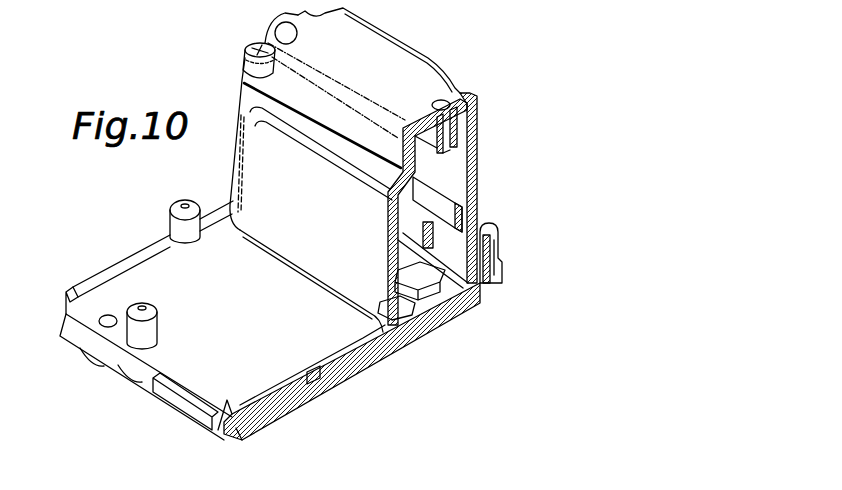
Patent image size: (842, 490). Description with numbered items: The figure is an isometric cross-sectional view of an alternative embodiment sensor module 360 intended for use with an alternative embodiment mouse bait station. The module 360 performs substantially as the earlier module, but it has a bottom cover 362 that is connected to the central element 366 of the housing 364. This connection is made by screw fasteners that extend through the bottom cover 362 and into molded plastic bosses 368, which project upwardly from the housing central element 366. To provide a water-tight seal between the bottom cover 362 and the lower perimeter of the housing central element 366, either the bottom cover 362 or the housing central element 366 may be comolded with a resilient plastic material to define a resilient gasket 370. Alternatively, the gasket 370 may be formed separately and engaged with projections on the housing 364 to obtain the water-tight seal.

The sensor module 360 is at (420, 25).
The bottom cover 362 is at (424, 337).
The housing 364 is at (478, 160).
The housing central element 366 is at (478, 201).
The molded plastic bosses 368 is at (500, 244).
The resilient gasket 370 is at (258, 421).